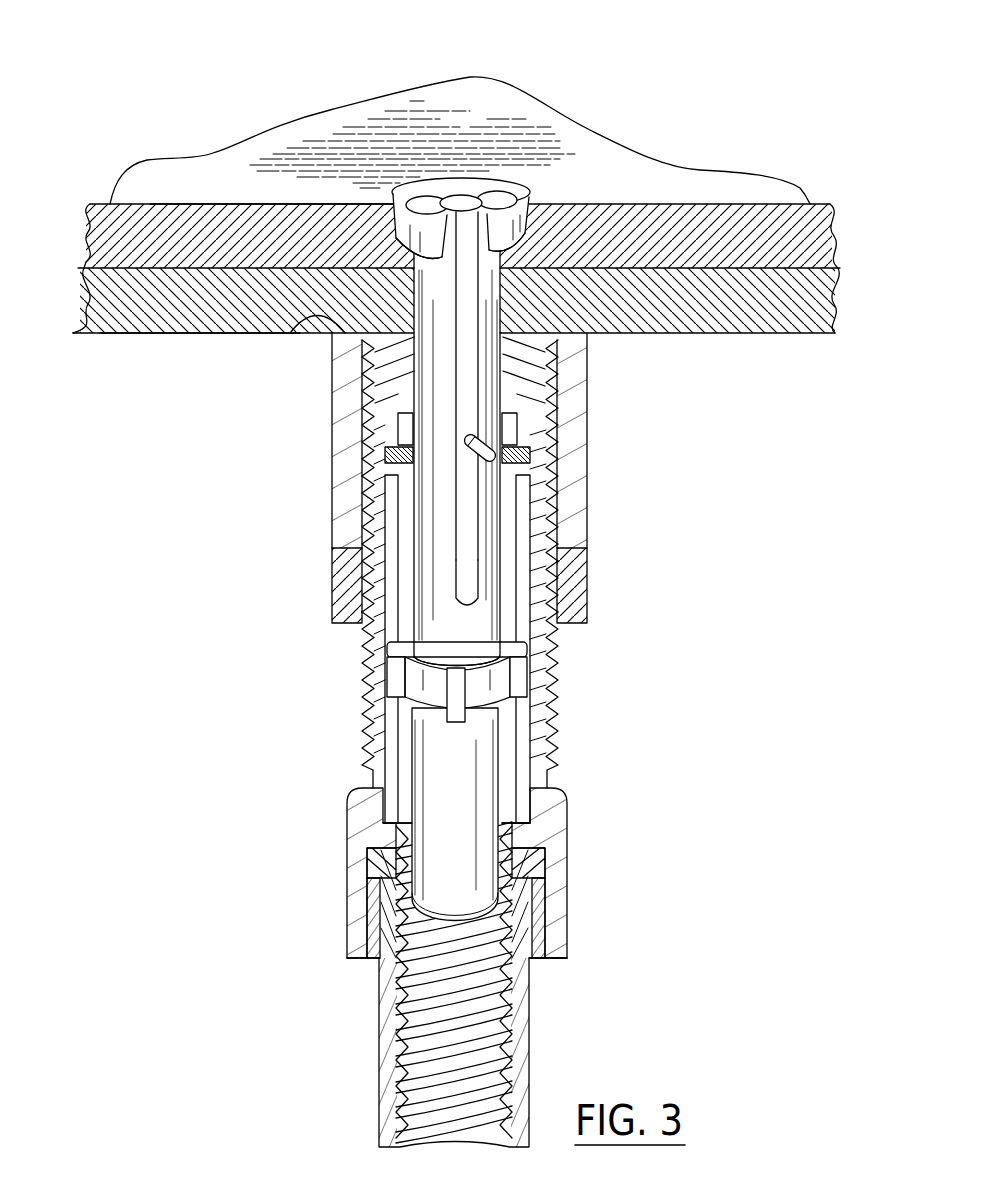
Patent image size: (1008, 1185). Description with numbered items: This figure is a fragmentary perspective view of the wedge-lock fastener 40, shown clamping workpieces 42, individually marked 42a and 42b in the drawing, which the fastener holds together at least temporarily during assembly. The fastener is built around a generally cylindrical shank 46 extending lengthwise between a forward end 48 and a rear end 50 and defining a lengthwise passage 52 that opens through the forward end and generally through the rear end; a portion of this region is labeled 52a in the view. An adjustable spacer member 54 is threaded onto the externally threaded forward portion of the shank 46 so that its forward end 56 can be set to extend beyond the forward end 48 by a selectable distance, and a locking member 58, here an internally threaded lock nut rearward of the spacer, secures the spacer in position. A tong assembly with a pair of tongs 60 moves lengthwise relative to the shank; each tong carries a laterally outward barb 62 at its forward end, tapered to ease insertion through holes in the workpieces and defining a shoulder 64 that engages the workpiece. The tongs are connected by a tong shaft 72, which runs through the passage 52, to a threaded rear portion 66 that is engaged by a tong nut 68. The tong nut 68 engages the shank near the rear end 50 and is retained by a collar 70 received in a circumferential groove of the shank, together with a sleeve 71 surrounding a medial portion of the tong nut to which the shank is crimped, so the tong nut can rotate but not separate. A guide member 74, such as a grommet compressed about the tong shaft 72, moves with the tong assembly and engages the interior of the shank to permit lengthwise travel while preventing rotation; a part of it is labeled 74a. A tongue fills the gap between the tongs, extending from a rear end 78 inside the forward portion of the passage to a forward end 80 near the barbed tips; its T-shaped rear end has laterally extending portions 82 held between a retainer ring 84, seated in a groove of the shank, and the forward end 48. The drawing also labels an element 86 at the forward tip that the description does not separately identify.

The wedge-lock fastener 40 is at (243, 741).
The workpieces 42 is at (836, 226).
The panel lower surface 42a is at (104, 334).
The panel upper surface 42b is at (133, 204).
The shank 46 is at (348, 800).
The forward end of the shank 48 is at (540, 377).
The rear end of the shank 50 is at (359, 960).
The lengthwise extending passage 52 is at (552, 560).
The external threads of sleeve 52a is at (545, 633).
The adjustable spacer member 54 is at (343, 453).
The forward end of the adjustable spacer member 56 is at (290, 333).
The locking member 58 is at (343, 588).
The tongs 60 is at (430, 375).
The barb 62 is at (421, 200).
The shoulders 64 is at (415, 270).
The threaded rear portion of the tong assembly 66 is at (460, 1002).
The tong nut 68 is at (522, 1098).
The collar 70 is at (462, 290).
The sleeve 71 is at (546, 962).
The tong shaft 72 is at (433, 748).
The guide member 74 is at (418, 673).
The collar lug 74a is at (522, 682).
The rear end of the tongue 78 is at (474, 463).
The forward end of the tongue 80 is at (457, 197).
The laterally extending portions 82 is at (500, 447).
The retainer ring 84 is at (388, 456).
The collet head 86 is at (437, 190).